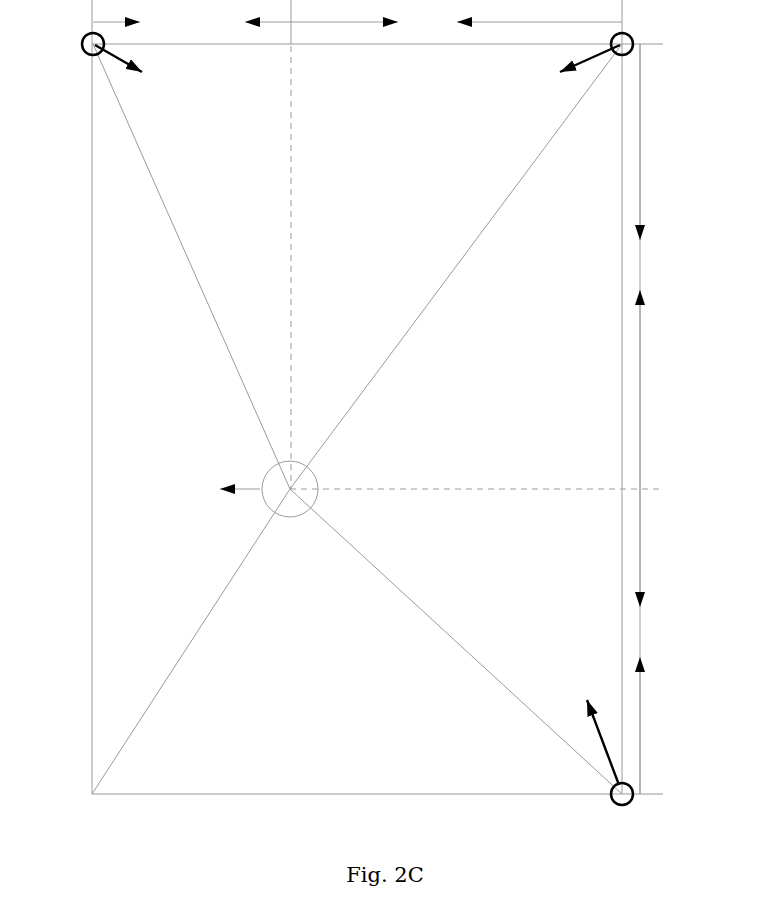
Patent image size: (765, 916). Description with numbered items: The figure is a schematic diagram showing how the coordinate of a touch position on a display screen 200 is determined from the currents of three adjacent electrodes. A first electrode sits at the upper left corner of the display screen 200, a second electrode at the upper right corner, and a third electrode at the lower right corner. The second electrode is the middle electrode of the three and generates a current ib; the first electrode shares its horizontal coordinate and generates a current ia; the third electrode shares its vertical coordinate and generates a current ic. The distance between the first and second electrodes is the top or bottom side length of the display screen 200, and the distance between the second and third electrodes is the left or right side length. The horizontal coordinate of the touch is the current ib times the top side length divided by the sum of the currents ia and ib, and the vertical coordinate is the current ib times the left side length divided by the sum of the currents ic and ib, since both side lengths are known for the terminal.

The display screen 200 is at (404, 397).
The current generated by the first electrode ia is at (140, 70).
The current generated by the second electrode ib is at (562, 60).
The current generated by the third electrode ic is at (581, 739).